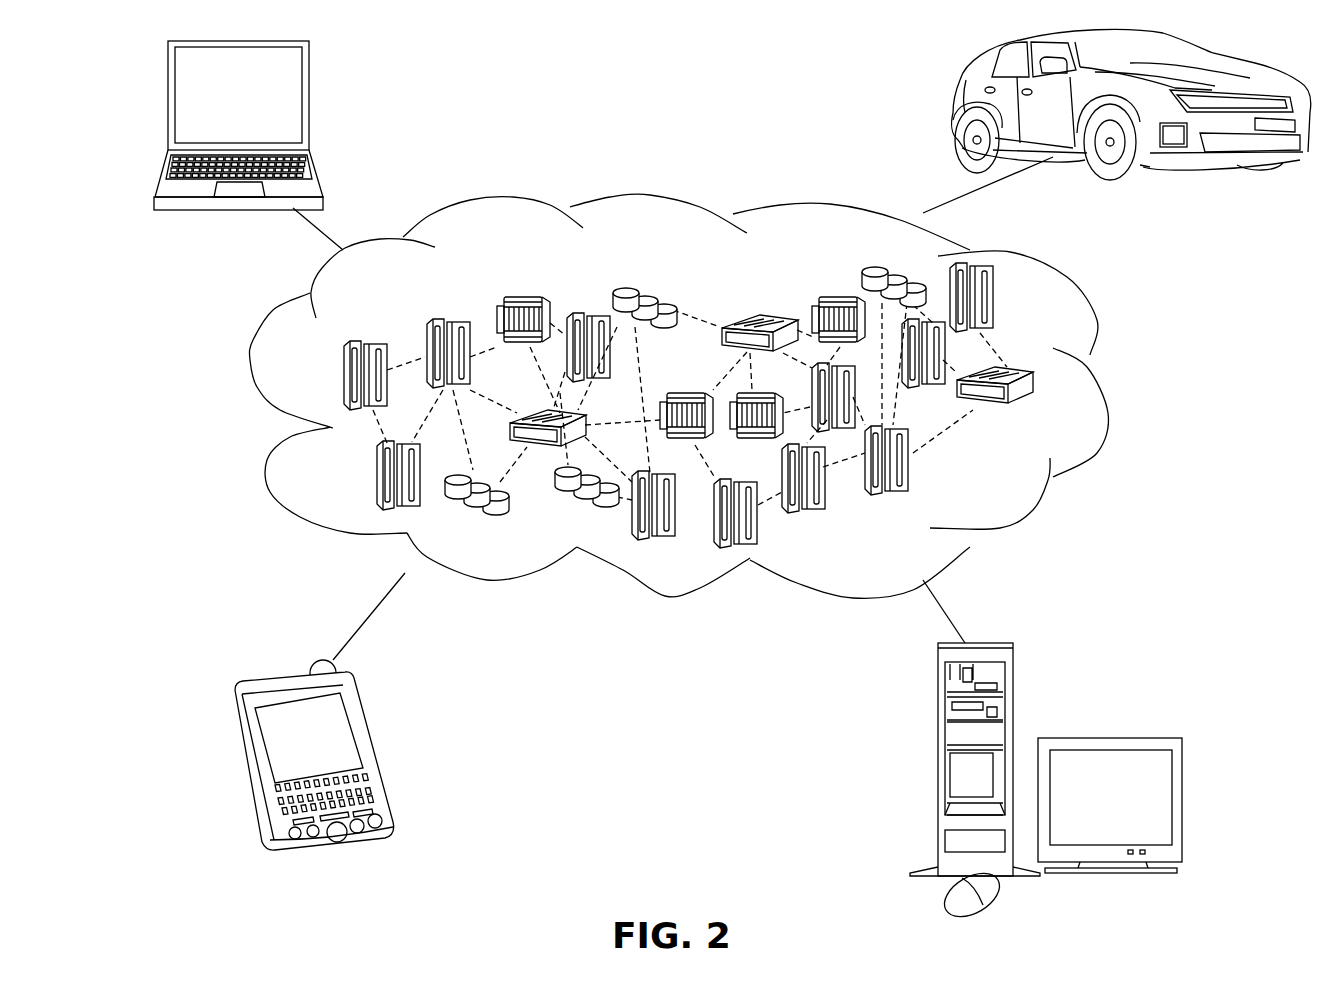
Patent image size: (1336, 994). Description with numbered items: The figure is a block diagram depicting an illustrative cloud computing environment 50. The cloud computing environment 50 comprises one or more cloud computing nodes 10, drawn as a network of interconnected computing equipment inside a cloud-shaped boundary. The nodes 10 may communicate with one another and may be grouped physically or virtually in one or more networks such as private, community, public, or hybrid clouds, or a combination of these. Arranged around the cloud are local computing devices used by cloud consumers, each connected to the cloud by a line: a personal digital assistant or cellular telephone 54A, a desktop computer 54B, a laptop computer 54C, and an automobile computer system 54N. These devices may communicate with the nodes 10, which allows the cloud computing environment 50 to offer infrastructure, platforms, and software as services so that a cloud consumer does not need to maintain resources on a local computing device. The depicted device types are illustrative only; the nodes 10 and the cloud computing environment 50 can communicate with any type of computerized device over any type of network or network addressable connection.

The cloud computing environment 50 is at (1100, 382).
The cloud computing node 10 is at (1020, 488).
The personal digital assistant or cellular telephone 54A is at (363, 720).
The desktop computer 54B is at (938, 703).
The laptop computer 54C is at (310, 80).
The automobile computer system 54N is at (957, 97).